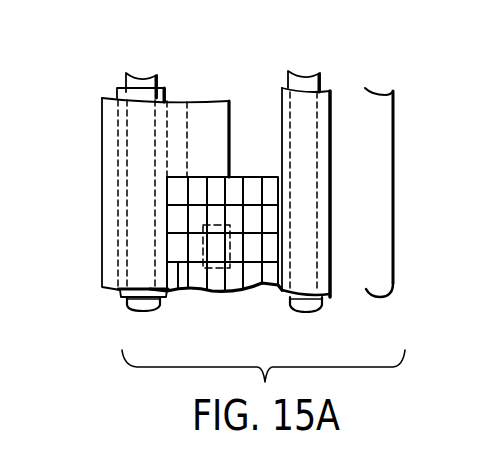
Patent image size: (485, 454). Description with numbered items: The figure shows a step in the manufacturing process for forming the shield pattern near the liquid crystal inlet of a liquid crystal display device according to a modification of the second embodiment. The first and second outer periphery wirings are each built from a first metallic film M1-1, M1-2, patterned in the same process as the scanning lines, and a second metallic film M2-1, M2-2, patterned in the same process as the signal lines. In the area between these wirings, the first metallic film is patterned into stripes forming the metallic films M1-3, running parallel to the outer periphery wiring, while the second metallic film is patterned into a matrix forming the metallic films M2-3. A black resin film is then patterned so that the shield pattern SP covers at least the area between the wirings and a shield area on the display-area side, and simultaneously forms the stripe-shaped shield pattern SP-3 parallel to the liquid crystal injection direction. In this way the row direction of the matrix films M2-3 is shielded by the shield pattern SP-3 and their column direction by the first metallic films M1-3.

The shield pattern SP is at (106, 158).
The second metallic film M2-1 is at (117, 92).
The first metallic film M1-1 is at (136, 84).
The first metallic films M1-3 is at (253, 190).
The shield pattern SP-3 is at (179, 292).
The second metallic films M2-3 is at (267, 285).
The second metallic film M2-2 is at (330, 89).
The first metallic film M1-2 is at (304, 74).